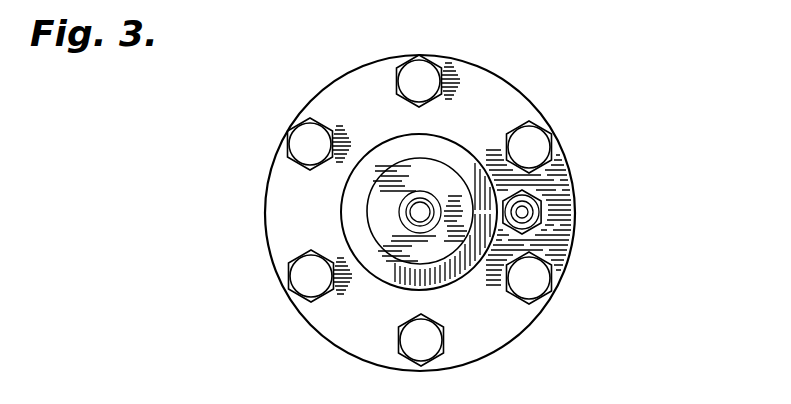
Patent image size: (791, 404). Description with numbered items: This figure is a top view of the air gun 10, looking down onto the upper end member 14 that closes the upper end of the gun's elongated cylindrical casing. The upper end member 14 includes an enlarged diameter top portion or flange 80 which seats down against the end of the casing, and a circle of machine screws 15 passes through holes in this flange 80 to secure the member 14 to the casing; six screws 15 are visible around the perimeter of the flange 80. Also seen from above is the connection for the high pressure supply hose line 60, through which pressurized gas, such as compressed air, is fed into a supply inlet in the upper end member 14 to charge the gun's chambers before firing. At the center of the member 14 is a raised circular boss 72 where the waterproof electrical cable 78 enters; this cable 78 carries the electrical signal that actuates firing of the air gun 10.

The air gun 10 is at (648, 148).
The upper end member 14 is at (496, 327).
The machine screws 15 is at (300, 142).
The high pressure supply hose line 60 is at (545, 212).
The hub 72 is at (456, 135).
The waterproof electrical cable 78 is at (419, 212).
The top portion or flange 80 is at (560, 252).